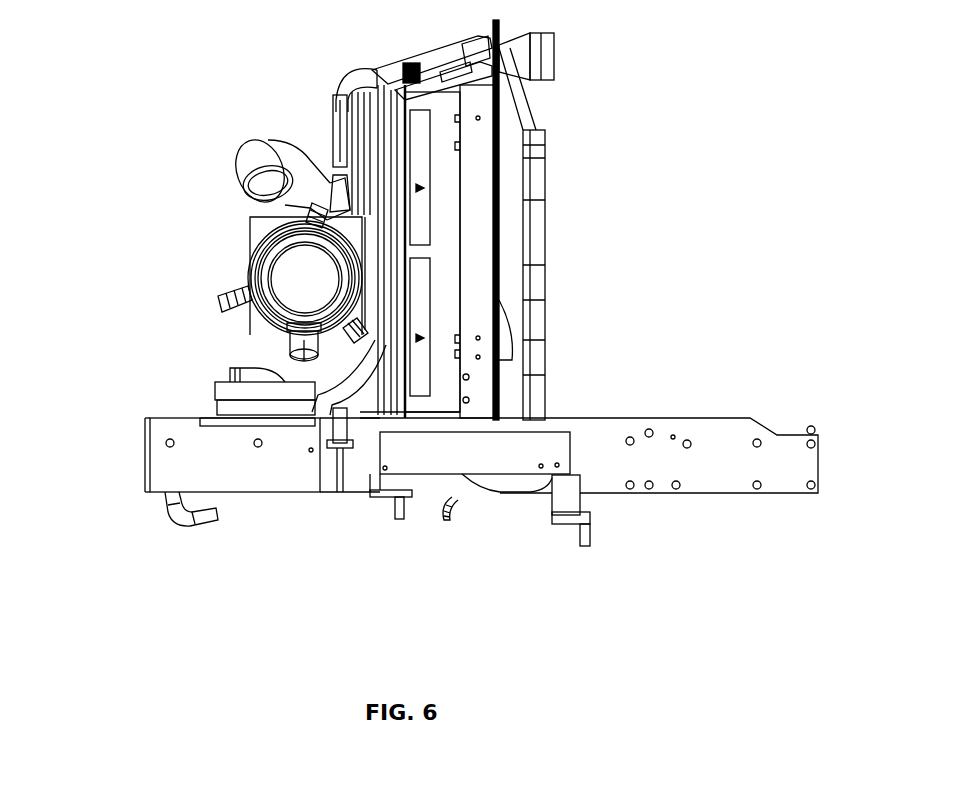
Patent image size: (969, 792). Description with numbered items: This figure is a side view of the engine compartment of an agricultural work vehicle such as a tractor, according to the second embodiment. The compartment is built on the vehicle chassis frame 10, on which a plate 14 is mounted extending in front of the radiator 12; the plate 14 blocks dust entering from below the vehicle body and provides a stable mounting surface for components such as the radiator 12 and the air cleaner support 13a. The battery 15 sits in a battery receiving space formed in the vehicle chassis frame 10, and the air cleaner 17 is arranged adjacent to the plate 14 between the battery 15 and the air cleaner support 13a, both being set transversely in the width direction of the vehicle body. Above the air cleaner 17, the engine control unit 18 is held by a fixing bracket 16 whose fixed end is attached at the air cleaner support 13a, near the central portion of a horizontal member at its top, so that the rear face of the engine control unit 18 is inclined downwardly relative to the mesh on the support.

The vehicle chassis frame 10 is at (282, 455).
The radiator 12 is at (478, 178).
The air cleaner support 13a is at (387, 77).
The plate 14 is at (152, 420).
The battery 15 is at (232, 393).
The fixing bracket 16 is at (352, 85).
The air cleaner 17 is at (285, 283).
The engine control unit 18 is at (337, 147).